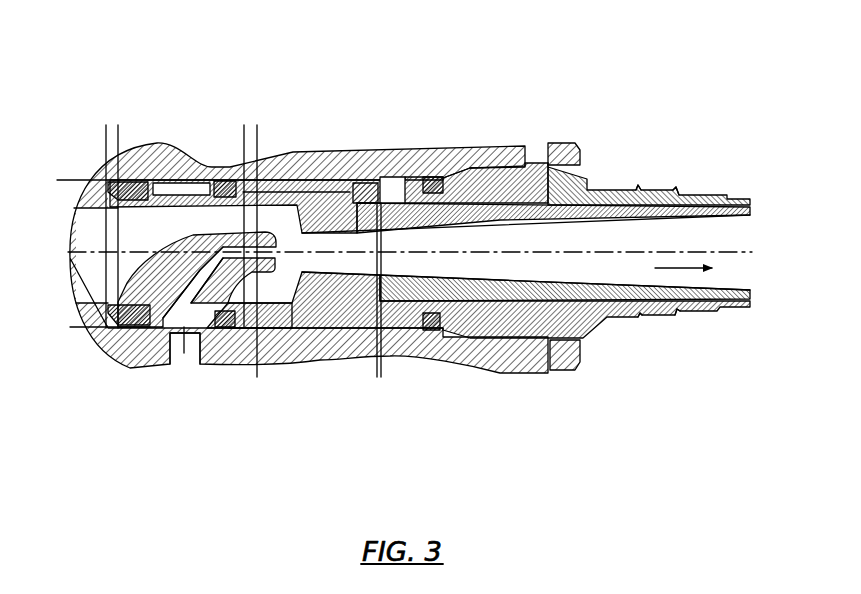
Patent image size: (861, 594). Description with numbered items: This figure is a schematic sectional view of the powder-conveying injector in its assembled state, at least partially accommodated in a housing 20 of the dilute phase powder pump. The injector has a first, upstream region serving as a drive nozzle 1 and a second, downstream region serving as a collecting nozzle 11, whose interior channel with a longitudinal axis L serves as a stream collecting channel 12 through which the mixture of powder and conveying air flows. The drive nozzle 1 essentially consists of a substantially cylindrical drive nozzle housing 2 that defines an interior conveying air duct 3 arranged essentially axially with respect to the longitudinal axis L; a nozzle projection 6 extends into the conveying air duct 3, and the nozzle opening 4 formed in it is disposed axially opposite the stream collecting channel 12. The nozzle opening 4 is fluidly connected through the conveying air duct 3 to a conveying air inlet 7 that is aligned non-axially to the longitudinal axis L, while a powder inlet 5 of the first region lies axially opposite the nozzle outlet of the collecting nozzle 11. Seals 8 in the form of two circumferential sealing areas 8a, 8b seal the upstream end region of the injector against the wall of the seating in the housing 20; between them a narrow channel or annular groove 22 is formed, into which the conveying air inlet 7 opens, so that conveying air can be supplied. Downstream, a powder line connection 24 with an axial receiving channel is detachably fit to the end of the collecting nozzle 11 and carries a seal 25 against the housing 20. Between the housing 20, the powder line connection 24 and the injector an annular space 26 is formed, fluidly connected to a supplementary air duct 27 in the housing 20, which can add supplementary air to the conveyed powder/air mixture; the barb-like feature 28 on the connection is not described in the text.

The drive nozzle 1 is at (312, 180).
The drive nozzle housing 2 is at (321, 330).
The conveying air duct 3 is at (205, 325).
The nozzle opening 4 is at (304, 180).
The powder inlet 5 is at (105, 240).
The nozzle projection 6 is at (263, 330).
The conveying air inlet 7 is at (170, 335).
The seals 8 is at (175, 181).
The first circumferential sealing area 8a is at (112, 188).
The second circumferential sealing area 8b is at (224, 183).
The collecting nozzle 11 is at (485, 210).
The stream collecting channel 12 is at (643, 235).
The housing 20 is at (488, 378).
The annular groove 22 is at (182, 187).
The powder line connection 24 is at (560, 187).
The seal 25 is at (430, 185).
The annular space 26 is at (386, 187).
The supplementary air duct 27 is at (386, 332).
The barb 28 is at (640, 190).
The longitudinal axis L is at (682, 248).